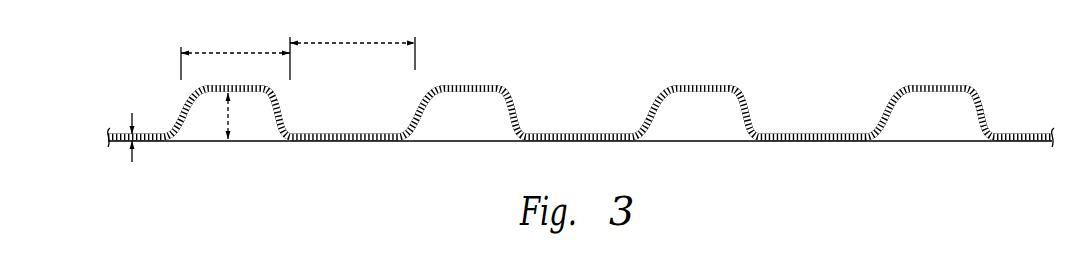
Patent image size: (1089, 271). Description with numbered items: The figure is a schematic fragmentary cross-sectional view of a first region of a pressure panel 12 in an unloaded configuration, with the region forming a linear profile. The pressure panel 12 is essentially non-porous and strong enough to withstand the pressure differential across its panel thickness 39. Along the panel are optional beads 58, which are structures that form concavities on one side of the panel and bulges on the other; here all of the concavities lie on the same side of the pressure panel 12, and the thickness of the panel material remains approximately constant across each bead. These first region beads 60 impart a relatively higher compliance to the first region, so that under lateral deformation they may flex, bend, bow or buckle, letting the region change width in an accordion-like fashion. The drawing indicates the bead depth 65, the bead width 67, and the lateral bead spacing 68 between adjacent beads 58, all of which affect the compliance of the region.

The pressure panel 12 is at (581, 75).
The beads 58 is at (287, 106).
The first region beads 60 is at (291, 133).
The panel thickness 39 is at (132, 162).
The bead depth 65 is at (226, 130).
The bead width 67 is at (208, 51).
The lateral bead spacing 68 is at (368, 42).